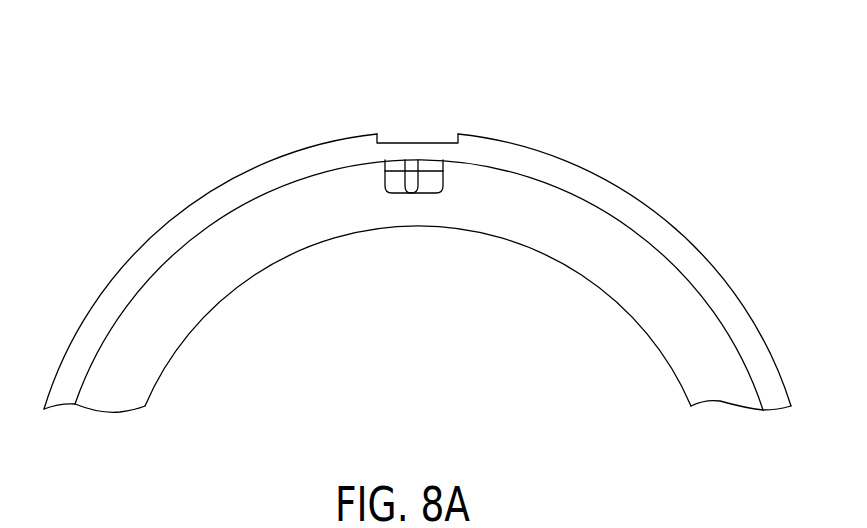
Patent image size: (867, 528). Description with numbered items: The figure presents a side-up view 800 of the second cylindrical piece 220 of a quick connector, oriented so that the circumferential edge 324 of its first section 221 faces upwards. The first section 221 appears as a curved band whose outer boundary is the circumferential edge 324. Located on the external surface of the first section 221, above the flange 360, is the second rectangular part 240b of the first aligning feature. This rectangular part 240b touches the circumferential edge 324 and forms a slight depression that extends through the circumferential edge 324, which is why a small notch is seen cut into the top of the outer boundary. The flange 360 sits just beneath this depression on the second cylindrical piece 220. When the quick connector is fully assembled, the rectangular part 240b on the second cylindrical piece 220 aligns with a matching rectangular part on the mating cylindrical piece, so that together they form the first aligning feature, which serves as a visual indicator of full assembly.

The side-up view 800 is at (417, 214).
The second cylindrical piece 220 is at (417, 230).
The first section 221 is at (265, 254).
The second rectangular part 240b is at (428, 142).
The circumferential edge 324 is at (652, 228).
The flange 360 is at (393, 172).